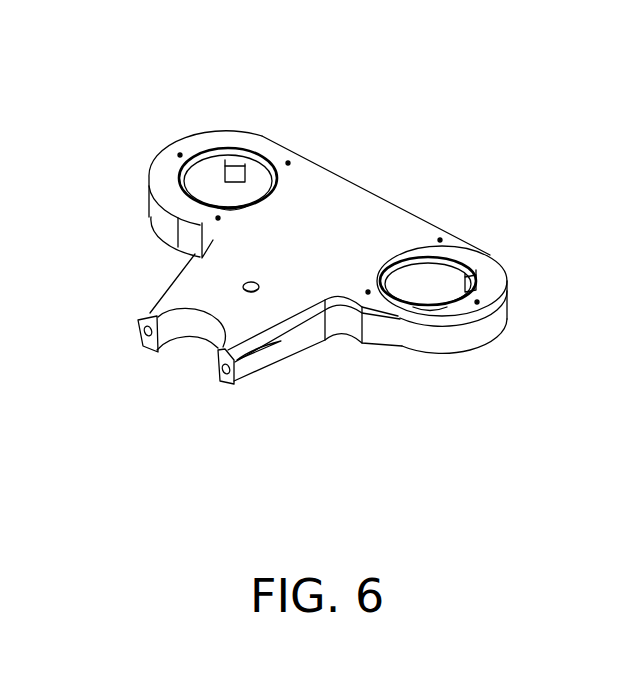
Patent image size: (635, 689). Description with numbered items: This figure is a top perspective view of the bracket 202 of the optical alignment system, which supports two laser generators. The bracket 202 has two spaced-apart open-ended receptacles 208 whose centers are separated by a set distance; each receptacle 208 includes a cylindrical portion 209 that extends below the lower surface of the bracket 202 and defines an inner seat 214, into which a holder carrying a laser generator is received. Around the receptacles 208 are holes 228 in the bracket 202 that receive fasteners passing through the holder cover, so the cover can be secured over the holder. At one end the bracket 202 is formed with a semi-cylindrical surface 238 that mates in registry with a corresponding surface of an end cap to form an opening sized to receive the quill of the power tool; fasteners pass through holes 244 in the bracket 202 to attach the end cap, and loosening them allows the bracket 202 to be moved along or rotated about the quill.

The bracket 202 is at (446, 120).
The receptacle 208 is at (246, 164).
The cylindrical portion 209 is at (208, 180).
The inner seat 214 is at (182, 182).
The hole 228 is at (180, 155).
The semi-cylindrical surface 238 is at (193, 333).
The hole 244 is at (146, 343).